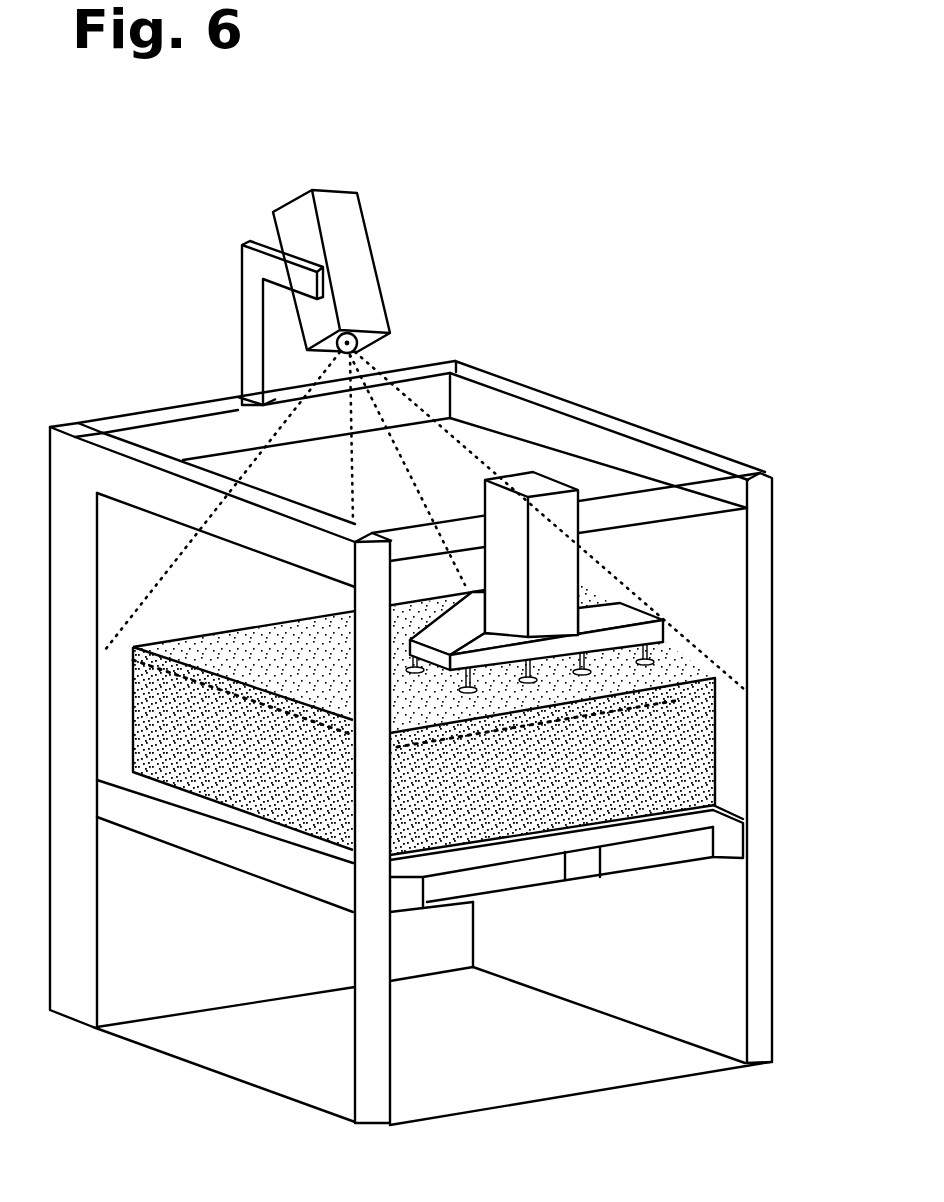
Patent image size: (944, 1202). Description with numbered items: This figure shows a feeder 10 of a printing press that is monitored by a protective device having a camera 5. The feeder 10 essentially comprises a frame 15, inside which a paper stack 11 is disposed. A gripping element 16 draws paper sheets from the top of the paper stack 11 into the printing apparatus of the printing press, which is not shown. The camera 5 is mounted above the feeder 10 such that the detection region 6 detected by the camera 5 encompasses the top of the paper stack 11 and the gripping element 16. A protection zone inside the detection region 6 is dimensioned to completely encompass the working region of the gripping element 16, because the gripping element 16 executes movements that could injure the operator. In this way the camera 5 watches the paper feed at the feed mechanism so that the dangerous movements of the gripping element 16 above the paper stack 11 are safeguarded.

The camera 5 is at (360, 263).
The detection region 6 is at (345, 500).
The feeder 10 is at (846, 1064).
The paper stack 11 is at (197, 647).
The frame 15 is at (363, 1107).
The gripping element 16 is at (563, 615).